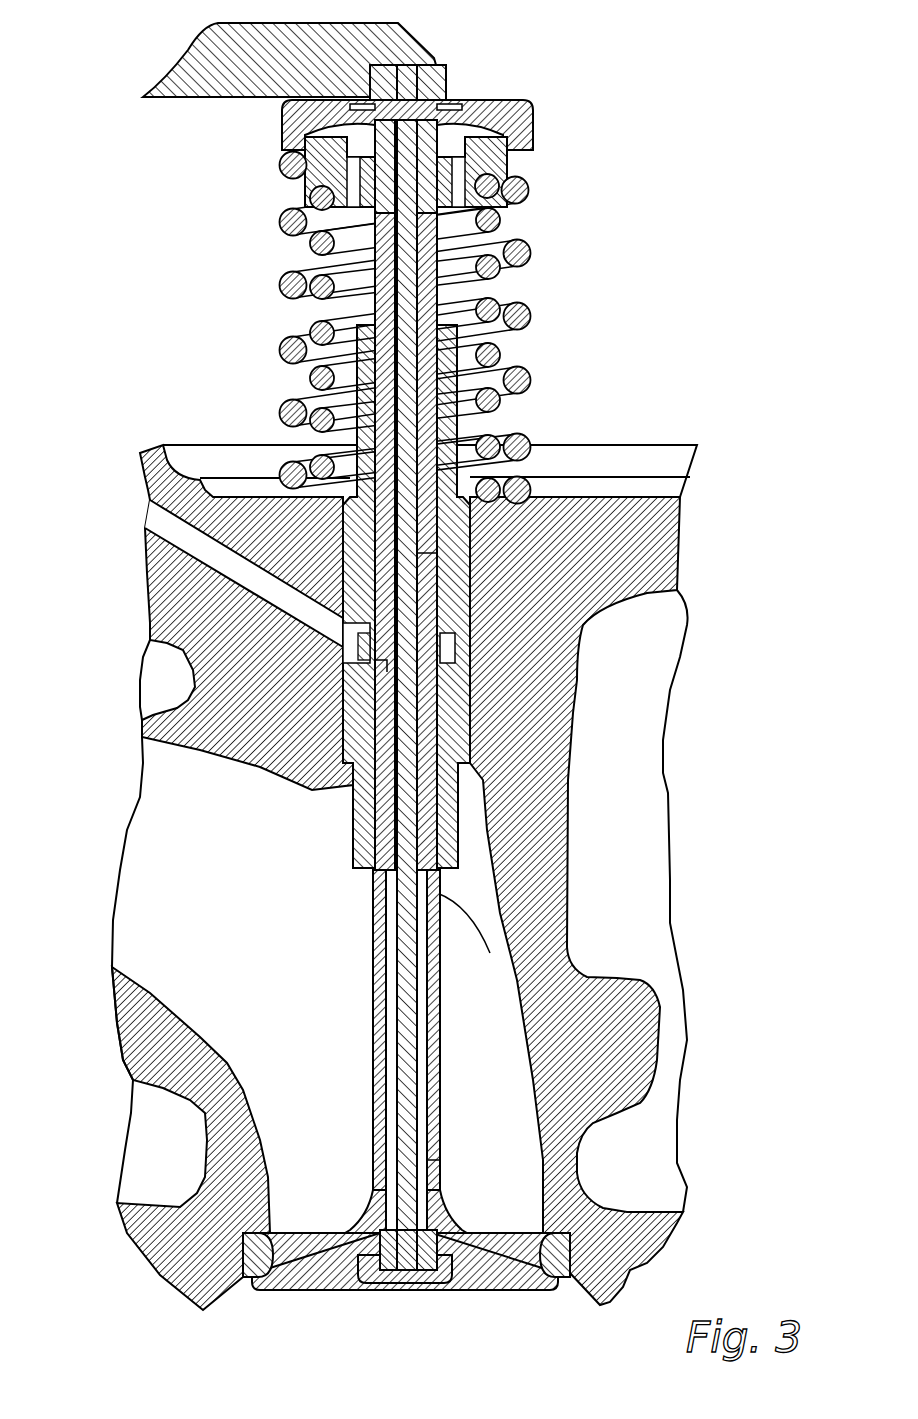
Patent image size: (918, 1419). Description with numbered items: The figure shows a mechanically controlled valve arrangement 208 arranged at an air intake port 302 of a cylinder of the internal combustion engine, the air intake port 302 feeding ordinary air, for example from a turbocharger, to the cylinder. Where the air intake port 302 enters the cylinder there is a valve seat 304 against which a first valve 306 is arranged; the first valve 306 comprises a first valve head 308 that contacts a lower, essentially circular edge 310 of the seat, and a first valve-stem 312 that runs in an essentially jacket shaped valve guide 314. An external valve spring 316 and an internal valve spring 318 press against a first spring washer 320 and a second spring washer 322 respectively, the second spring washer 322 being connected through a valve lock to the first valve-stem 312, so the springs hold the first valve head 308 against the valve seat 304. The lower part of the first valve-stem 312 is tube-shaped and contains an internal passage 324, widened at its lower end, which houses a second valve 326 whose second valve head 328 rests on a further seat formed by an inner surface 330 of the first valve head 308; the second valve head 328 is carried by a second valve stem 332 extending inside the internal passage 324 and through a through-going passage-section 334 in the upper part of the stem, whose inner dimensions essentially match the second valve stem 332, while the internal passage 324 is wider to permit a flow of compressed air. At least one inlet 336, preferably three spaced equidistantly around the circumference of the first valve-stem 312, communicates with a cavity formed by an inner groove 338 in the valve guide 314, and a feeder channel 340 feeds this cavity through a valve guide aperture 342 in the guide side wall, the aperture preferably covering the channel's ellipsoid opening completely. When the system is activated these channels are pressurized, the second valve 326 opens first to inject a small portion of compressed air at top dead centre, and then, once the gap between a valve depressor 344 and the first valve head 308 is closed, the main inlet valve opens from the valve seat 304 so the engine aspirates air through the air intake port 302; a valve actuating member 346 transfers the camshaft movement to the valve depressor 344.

The mechanically controlled valve arrangement 208 is at (602, 68).
The air intake port 302 is at (147, 866).
The valve seat 304 is at (557, 1268).
The first valve 306 is at (315, 1040).
The first valve head 308 is at (490, 1290).
The lower essentially circular edge 310 is at (246, 1278).
The first valve-stem 312 is at (375, 968).
The valve guide 314 is at (457, 720).
The external valve spring 316 is at (530, 247).
The internal valve spring 318 is at (510, 353).
The first spring washer 320 is at (520, 100).
The second spring washer 322 is at (510, 160).
The internal passage 324 is at (423, 1057).
The second valve 326 is at (400, 930).
The second valve head 328 is at (433, 1278).
The inner surface 330 is at (355, 1284).
The second valve stem 332 is at (440, 1160).
The through-going passage-section 334 is at (420, 553).
The inlet 336 is at (385, 674).
The inner groove 338 is at (445, 647).
The feeder channel 340 is at (163, 517).
The valve guide aperture 342 is at (345, 619).
The valve depressor 344 is at (425, 72).
The valve actuating member 346 is at (250, 67).